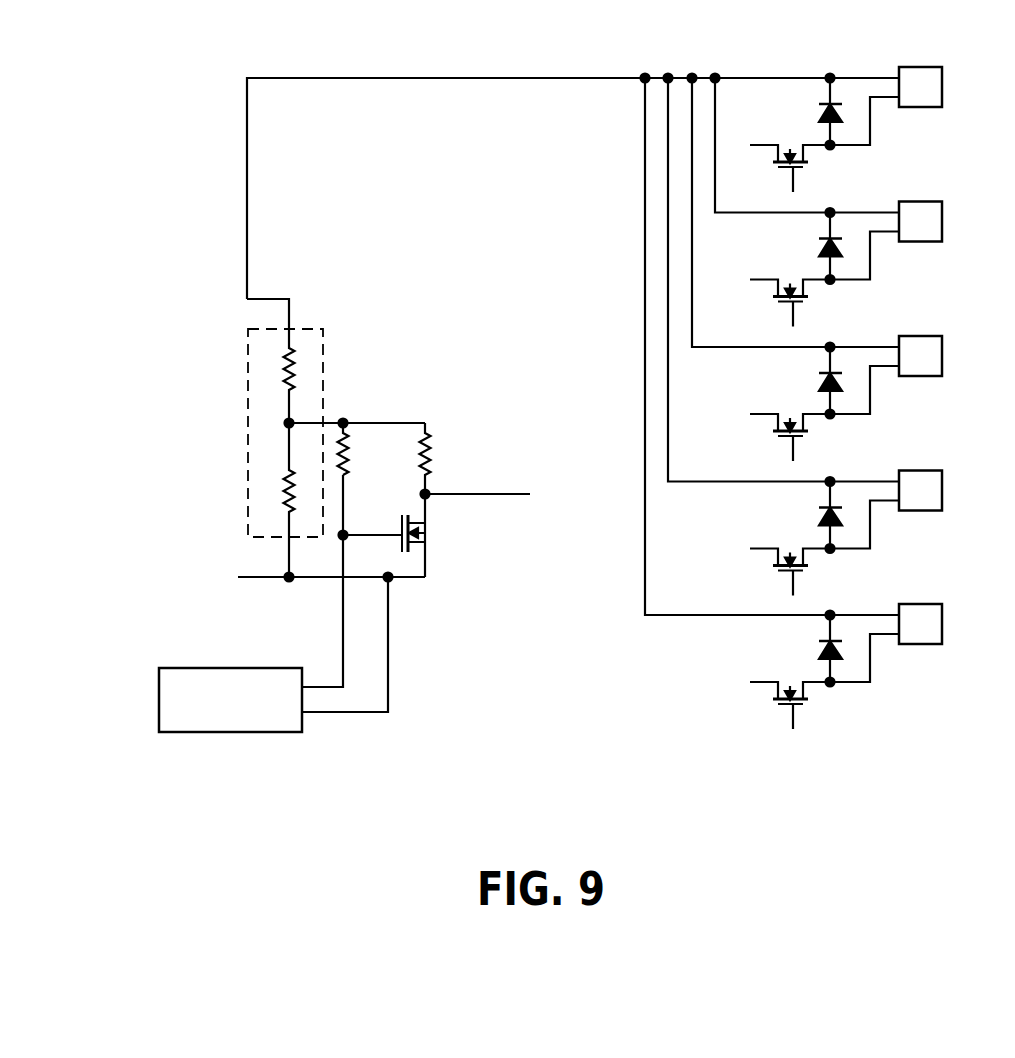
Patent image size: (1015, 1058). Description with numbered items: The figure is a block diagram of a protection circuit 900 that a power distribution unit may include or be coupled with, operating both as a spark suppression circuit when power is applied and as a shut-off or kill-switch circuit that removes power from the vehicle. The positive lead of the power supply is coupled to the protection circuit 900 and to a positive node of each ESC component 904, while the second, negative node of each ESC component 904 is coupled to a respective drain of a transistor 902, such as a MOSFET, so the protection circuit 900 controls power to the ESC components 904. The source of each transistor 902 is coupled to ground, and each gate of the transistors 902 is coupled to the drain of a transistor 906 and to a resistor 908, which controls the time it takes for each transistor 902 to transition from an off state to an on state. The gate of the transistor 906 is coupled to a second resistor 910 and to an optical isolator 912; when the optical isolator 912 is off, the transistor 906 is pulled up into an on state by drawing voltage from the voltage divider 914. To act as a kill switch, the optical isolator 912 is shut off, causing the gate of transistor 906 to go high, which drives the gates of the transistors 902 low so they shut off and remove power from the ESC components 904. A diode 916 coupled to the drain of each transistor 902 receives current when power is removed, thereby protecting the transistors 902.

The protection circuit 900 is at (138, 298).
The transistor 902 is at (810, 163).
The ESC component 904 is at (942, 91).
The transistor 906 is at (433, 538).
The resistor 908 is at (438, 453).
The second resistor 910 is at (353, 453).
The optical isolator 912 is at (262, 732).
The voltage divider 914 is at (248, 405).
The diode 916 is at (818, 113).